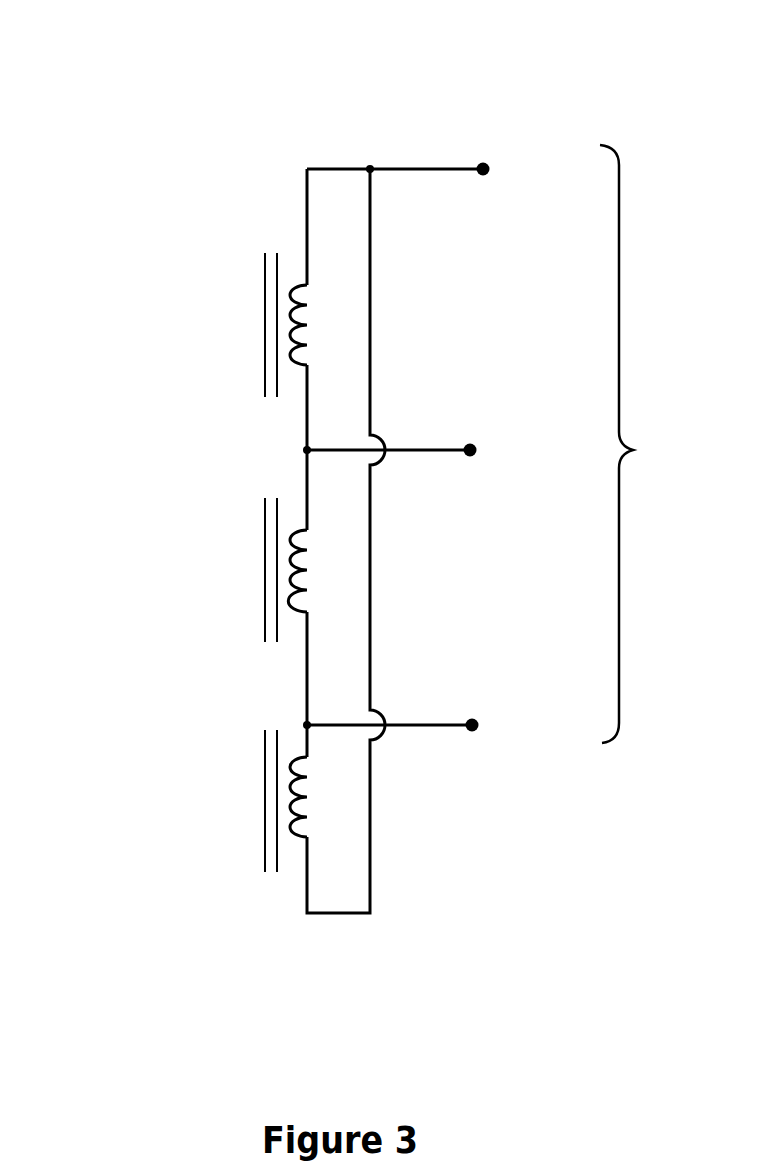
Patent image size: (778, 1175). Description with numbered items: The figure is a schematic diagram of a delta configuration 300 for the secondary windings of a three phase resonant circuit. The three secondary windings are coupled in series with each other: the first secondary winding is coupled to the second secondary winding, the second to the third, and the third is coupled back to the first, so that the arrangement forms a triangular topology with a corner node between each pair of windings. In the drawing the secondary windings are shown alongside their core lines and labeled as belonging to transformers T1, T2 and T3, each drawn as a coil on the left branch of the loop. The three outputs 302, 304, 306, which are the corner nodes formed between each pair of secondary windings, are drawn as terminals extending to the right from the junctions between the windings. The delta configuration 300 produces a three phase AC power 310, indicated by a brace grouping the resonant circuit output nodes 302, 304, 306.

The delta configuration 300 is at (203, 72).
The output 302 is at (513, 168).
The output 304 is at (426, 449).
The output 306 is at (426, 724).
The three phase AC power 310 is at (650, 444).
The first transformer T1 is at (301, 306).
The second transformer T2 is at (304, 552).
The third transformer T3 is at (307, 783).